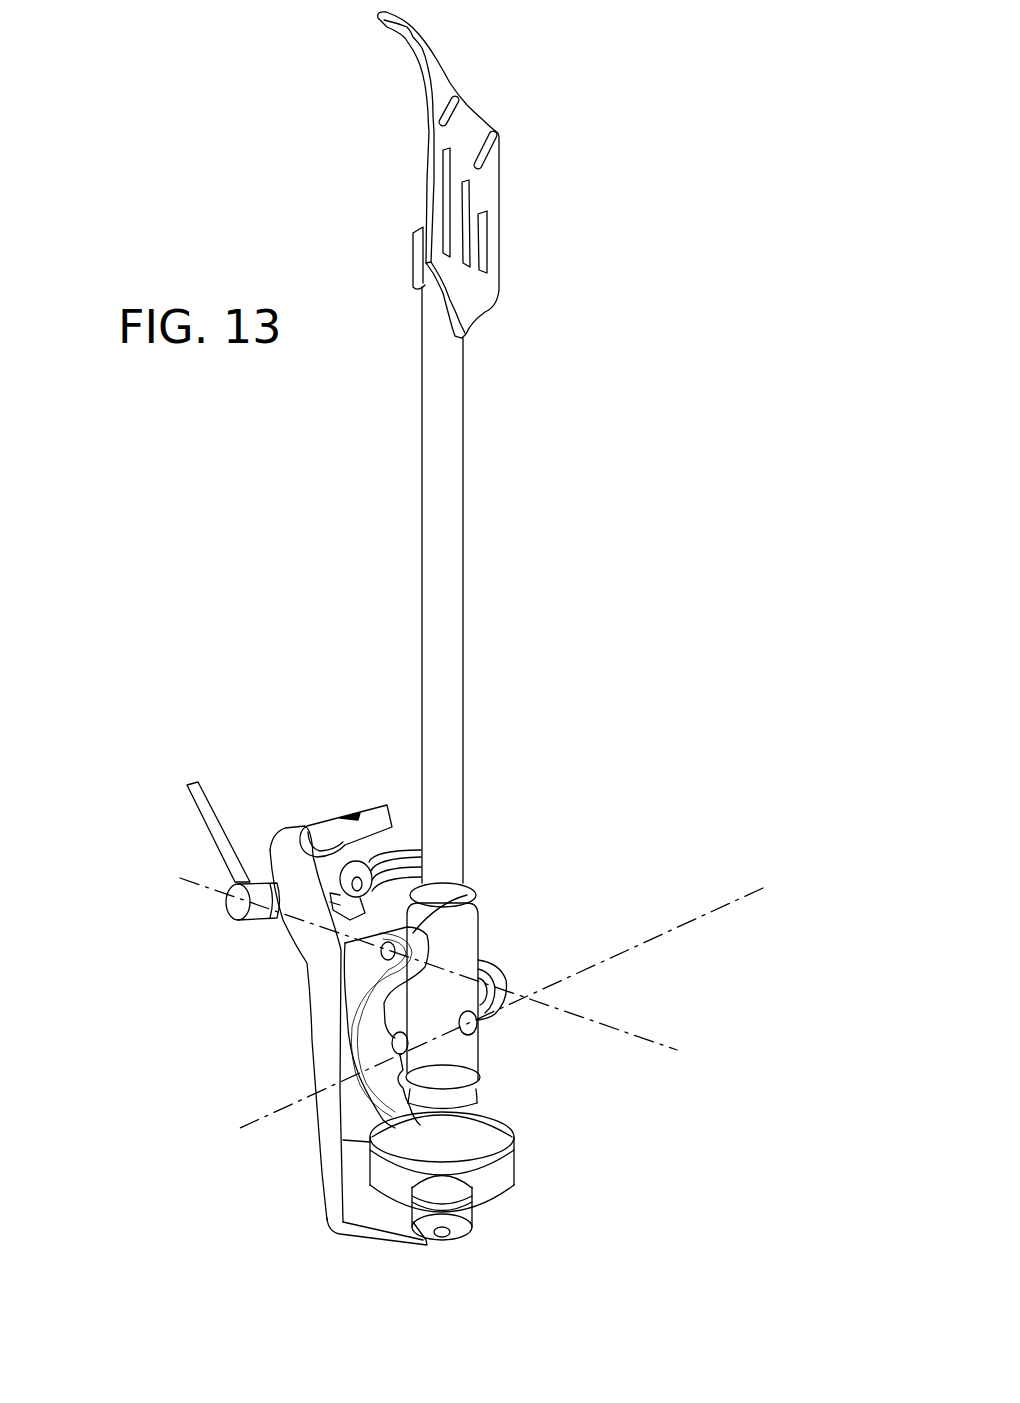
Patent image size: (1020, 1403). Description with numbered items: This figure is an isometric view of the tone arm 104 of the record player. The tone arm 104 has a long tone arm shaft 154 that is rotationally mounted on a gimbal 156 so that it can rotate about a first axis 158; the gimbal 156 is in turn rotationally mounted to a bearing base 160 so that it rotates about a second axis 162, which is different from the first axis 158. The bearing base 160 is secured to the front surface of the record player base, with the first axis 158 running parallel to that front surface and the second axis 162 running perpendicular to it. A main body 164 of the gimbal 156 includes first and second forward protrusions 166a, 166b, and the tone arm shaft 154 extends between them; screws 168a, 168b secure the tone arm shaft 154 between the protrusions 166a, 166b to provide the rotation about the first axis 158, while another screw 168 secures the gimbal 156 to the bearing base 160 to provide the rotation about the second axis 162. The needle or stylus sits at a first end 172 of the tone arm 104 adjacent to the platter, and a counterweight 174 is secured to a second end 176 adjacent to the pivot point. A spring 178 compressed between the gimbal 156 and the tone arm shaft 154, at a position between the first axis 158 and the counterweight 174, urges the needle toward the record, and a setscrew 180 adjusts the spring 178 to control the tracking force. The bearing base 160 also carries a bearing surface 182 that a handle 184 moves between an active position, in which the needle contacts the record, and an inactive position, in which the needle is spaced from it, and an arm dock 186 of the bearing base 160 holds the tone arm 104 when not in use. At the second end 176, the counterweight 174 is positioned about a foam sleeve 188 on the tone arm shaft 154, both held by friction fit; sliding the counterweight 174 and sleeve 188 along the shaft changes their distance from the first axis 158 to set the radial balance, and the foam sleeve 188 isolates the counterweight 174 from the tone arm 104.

The tone arm 104 is at (617, 193).
The tone arm shaft 154 is at (455, 608).
The gimbal 156 is at (345, 1004).
The first axis 158 is at (656, 1044).
The bearing base 160 is at (337, 1127).
The second axis 162 is at (733, 900).
The main body 164 is at (367, 1037).
The first forward protrusion 166a is at (470, 893).
The second forward protrusion 166b is at (500, 965).
The screw 168 is at (390, 1054).
The screw 168a is at (373, 953).
The screw 168b is at (512, 988).
The first end 172 is at (467, 123).
The counterweight 174 is at (387, 1148).
The second end 176 is at (462, 1212).
The spring 178 is at (488, 1080).
The setscrew 180 is at (478, 1025).
The bearing surface 182 is at (403, 840).
The handle 184 is at (205, 820).
The arm dock 186 is at (367, 822).
The foam sleeve 188 is at (410, 1207).